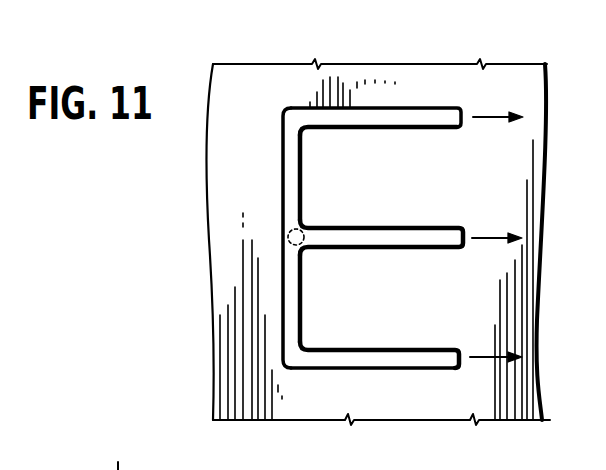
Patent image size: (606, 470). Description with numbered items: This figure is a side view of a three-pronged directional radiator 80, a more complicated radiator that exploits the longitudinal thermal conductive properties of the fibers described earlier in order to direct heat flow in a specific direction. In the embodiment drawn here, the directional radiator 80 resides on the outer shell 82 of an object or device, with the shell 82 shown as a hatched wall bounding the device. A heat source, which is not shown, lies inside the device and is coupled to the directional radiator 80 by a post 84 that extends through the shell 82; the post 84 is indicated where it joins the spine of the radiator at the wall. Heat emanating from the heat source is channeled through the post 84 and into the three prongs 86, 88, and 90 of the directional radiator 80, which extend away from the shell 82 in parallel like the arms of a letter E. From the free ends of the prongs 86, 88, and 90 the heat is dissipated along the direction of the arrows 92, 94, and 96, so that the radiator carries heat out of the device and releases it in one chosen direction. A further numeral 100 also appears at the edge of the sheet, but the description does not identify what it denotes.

The directional radiator 80 is at (288, 107).
The outer shell 82 is at (240, 353).
The post 84 is at (286, 236).
The prong 86 is at (408, 110).
The prong 88 is at (381, 238).
The prong 90 is at (390, 369).
The arrow 92 is at (490, 117).
The arrow 94 is at (488, 237).
The arrow 96 is at (482, 356).
The partial element of adjacent figure 100 is at (80, 469).